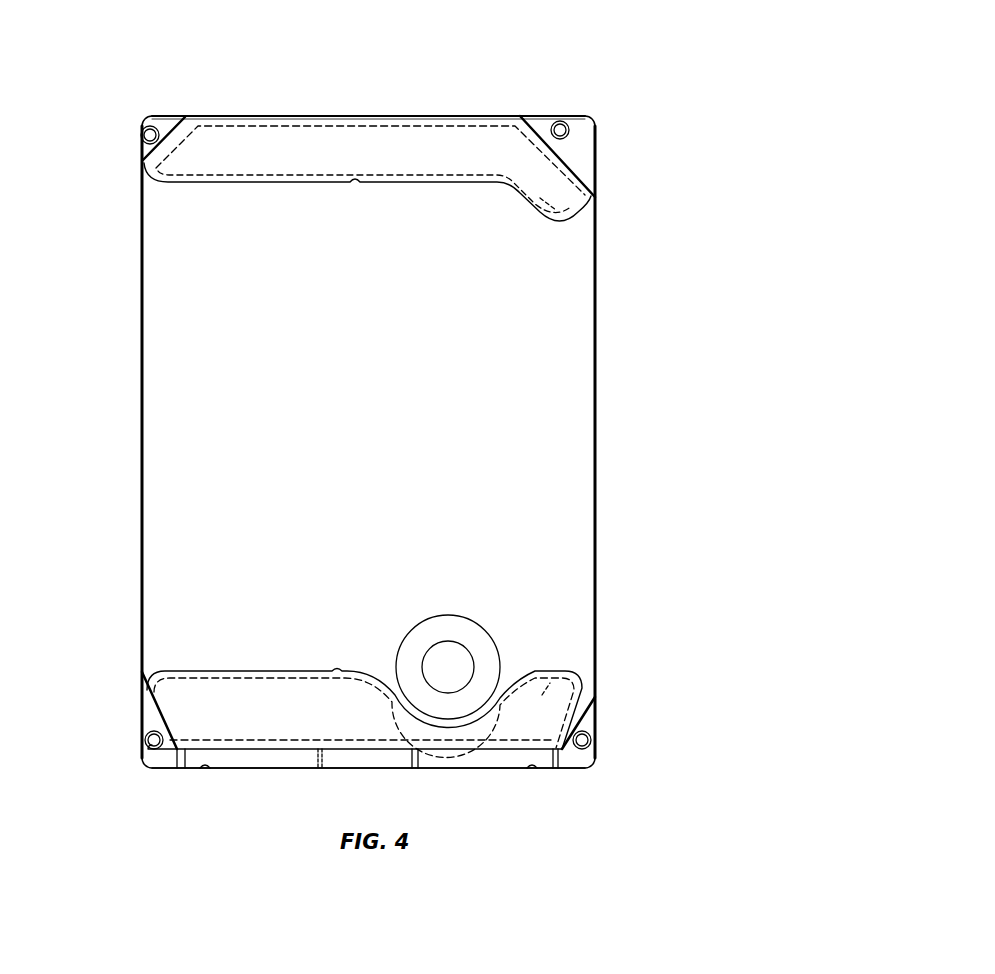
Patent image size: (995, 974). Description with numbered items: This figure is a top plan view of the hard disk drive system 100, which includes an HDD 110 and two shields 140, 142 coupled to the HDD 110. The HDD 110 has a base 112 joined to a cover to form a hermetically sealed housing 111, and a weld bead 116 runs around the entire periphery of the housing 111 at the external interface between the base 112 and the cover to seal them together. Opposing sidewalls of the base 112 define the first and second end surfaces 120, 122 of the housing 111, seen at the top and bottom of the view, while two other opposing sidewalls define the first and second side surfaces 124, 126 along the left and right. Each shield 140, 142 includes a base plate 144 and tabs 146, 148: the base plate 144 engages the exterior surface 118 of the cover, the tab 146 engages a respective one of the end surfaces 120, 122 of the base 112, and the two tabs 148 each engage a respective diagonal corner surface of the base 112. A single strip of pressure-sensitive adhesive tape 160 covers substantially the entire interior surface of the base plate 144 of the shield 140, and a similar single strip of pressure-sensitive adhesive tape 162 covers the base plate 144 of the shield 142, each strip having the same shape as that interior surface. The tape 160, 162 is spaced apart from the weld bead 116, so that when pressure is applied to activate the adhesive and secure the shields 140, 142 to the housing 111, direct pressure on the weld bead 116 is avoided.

The hard disk drive system 100 is at (378, 421).
The HDD 110 is at (363, 421).
The housing 111 is at (363, 421).
The base 112 is at (578, 148).
The weld bead 116 is at (141, 255).
The exterior surface of the cover 118 is at (565, 285).
The first end surface 120 is at (343, 116).
The second end surface 122 is at (490, 768).
The first side surface 124 is at (596, 545).
The second side surface 126 is at (141, 388).
The shield 140 is at (433, 130).
The shield 142 is at (370, 690).
The base plate 144 is at (402, 142).
The tab 146 is at (290, 117).
The tab 148 is at (158, 117).
The pressure-sensitive adhesive tape 160 is at (600, 213).
The pressure-sensitive adhesive tape 162 is at (595, 667).